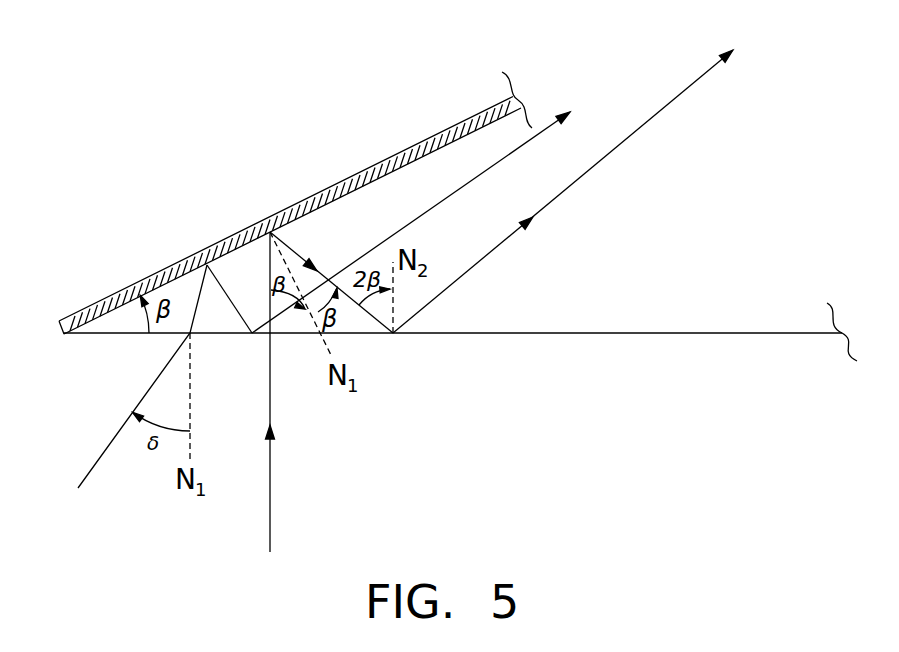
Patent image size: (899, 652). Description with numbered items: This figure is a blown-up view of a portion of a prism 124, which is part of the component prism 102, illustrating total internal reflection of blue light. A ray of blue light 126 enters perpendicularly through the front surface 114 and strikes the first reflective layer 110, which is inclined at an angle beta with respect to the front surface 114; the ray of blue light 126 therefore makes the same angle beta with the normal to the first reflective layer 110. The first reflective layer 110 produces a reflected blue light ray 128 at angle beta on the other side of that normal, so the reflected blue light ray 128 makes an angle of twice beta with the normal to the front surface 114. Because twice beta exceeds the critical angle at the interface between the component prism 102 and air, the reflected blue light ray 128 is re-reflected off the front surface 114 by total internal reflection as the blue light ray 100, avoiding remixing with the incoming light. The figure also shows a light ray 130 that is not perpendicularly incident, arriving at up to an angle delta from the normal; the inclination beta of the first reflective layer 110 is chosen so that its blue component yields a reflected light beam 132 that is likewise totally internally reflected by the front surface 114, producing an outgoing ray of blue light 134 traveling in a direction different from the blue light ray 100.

The blue light ray 100 is at (670, 100).
The component prism 102 is at (772, 249).
The first reflective layer 110 is at (380, 166).
The front surface 114 is at (490, 336).
The portion of a prism 124 is at (152, 230).
The ray of blue light 126 is at (268, 524).
The reflected blue light ray 128 is at (297, 248).
The light ray 130 is at (119, 430).
The reflected light beam 132 is at (228, 300).
The outgoing ray of blue light 134 is at (473, 181).